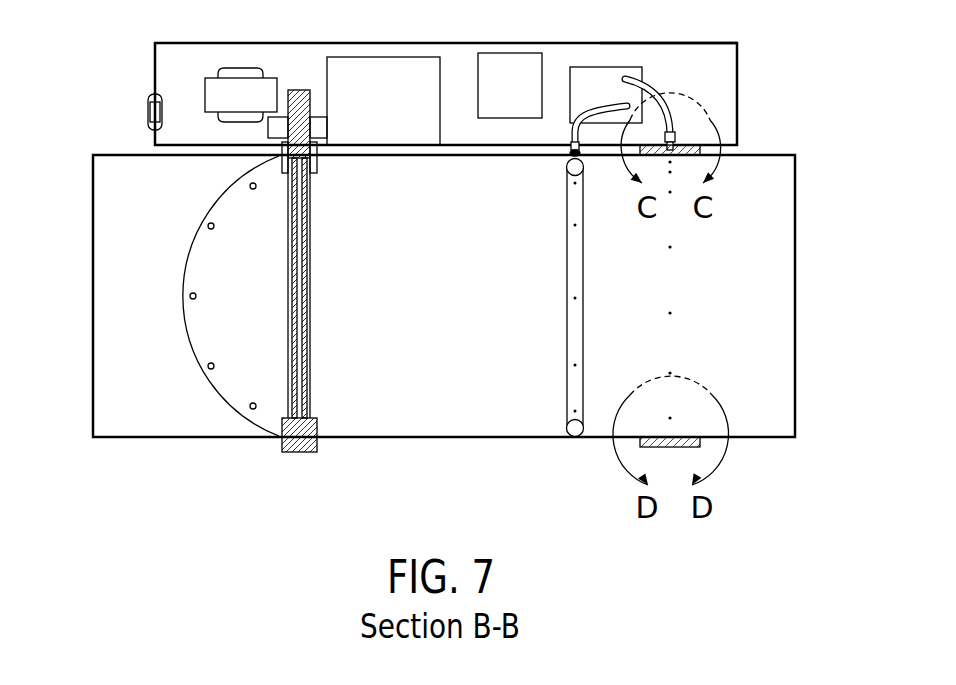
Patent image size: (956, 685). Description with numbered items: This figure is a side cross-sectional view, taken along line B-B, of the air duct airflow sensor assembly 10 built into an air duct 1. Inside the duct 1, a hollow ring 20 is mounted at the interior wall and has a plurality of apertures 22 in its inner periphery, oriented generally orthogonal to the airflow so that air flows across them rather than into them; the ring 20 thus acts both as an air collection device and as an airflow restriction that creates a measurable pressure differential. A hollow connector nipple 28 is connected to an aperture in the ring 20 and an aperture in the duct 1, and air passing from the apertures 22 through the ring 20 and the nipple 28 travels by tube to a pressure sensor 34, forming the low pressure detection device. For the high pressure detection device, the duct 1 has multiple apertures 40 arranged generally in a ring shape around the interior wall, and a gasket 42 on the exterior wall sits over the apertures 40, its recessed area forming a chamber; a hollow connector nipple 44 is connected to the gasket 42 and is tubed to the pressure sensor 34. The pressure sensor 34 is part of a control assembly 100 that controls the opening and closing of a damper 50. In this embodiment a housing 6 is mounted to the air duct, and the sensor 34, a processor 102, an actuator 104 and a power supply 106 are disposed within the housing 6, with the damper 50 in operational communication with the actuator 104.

The air duct 1 is at (116, 154).
The housing 6 is at (173, 43).
The air duct airflow sensor assembly 10 is at (756, 135).
The hollow ring 20 is at (569, 393).
The apertures 22 is at (577, 365).
The hollow connector nipple 28 is at (569, 128).
The pressure sensor 34 is at (602, 66).
The apertures 40 is at (670, 247).
The gasket 42 is at (700, 446).
The hollow connector nipple 44 is at (674, 132).
The damper 50 is at (158, 347).
The control assembly 100 is at (617, 43).
The processor 102 is at (511, 53).
The actuator 104 is at (388, 57).
The power supply 106 is at (240, 68).